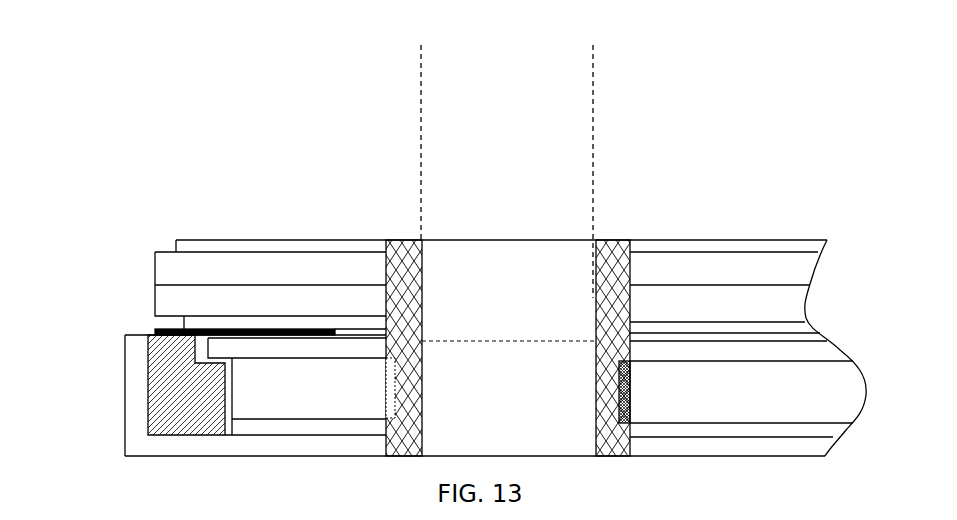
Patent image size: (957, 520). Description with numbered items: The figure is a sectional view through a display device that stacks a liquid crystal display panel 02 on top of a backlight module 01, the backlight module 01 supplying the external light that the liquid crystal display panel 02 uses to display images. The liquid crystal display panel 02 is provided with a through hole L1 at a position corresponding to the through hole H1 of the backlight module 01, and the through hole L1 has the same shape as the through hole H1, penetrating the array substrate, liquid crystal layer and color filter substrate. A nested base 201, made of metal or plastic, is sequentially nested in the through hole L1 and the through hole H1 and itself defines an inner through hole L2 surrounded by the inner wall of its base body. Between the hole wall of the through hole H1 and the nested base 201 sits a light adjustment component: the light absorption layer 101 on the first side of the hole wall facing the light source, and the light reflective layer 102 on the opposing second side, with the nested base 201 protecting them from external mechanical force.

The backlight module 01 is at (116, 337).
The liquid crystal display panel 02 is at (140, 242).
The light absorption layer 101 is at (632, 382).
The light reflective layer 102 is at (388, 382).
The nested base 201 is at (631, 270).
The through hole L1 is at (458, 287).
The inner through hole L2 is at (421, 97).
The through hole H1 is at (482, 387).